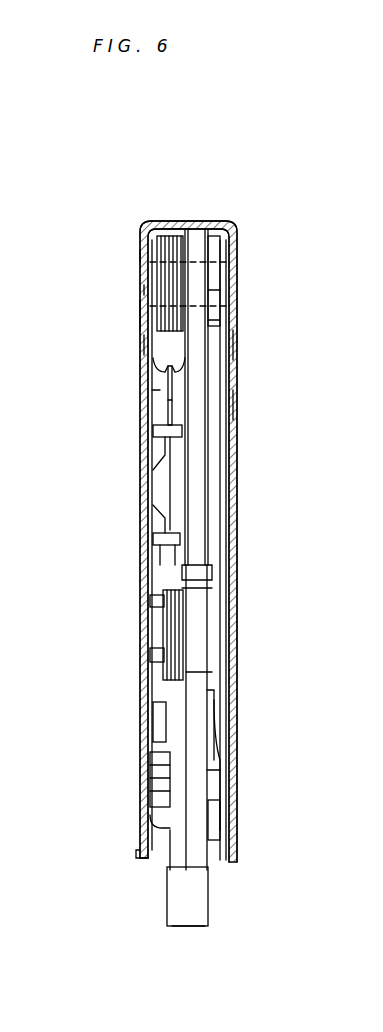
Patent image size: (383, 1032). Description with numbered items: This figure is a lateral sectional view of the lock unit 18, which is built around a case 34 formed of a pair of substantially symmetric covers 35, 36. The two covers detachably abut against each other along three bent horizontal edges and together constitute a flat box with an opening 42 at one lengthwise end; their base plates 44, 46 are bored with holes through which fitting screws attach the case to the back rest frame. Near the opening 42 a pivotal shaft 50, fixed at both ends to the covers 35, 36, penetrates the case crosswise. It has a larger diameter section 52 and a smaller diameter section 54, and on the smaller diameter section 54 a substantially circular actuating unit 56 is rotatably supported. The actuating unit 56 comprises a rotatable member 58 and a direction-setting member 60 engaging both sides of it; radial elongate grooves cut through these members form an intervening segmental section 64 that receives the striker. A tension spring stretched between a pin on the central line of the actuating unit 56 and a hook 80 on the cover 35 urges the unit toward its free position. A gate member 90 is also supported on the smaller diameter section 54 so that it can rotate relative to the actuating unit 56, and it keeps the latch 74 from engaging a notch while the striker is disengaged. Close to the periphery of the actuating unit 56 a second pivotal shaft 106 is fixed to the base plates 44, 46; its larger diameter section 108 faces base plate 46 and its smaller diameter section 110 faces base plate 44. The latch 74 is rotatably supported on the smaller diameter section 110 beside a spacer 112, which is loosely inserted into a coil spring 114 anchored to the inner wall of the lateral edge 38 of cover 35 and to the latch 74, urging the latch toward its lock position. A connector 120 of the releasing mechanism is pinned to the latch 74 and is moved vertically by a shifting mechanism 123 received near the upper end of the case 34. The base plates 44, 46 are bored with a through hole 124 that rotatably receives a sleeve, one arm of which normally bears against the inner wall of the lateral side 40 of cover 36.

The lock unit 18 is at (131, 288).
The case 34 is at (133, 313).
The cover 35 is at (143, 343).
The cover 36 is at (237, 345).
The lateral edge of cover 38 is at (170, 222).
The lateral side of cover 40 is at (208, 222).
The opening 42 is at (158, 857).
The base plate 44 is at (160, 413).
The base plate 46 is at (237, 405).
The pivotal shaft 50 is at (160, 785).
The larger diameter section 52 is at (160, 830).
The smaller diameter section 54 is at (218, 815).
The actuating unit 56 is at (200, 878).
The rotatable member 58 is at (222, 695).
The direction-setting member 60 is at (180, 848).
The segmental section 64 is at (208, 927).
The latch 74 is at (225, 562).
The hook 80 is at (160, 378).
The gate member 90 is at (222, 725).
The pivotal shaft 106 is at (225, 648).
The larger diameter section 108 is at (224, 672).
The smaller diameter section 110 is at (160, 655).
The spacer 112 is at (160, 600).
The coil spring 114 is at (225, 588).
The connector 120 is at (208, 488).
The shifting mechanism 123 is at (104, 247).
The through hole 124 is at (144, 288).